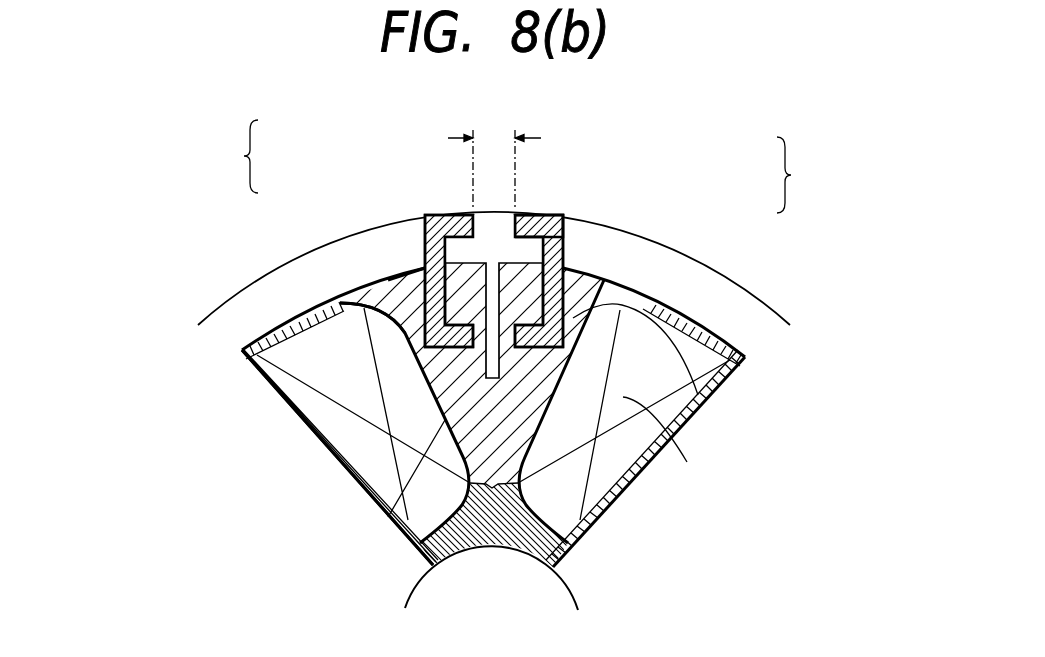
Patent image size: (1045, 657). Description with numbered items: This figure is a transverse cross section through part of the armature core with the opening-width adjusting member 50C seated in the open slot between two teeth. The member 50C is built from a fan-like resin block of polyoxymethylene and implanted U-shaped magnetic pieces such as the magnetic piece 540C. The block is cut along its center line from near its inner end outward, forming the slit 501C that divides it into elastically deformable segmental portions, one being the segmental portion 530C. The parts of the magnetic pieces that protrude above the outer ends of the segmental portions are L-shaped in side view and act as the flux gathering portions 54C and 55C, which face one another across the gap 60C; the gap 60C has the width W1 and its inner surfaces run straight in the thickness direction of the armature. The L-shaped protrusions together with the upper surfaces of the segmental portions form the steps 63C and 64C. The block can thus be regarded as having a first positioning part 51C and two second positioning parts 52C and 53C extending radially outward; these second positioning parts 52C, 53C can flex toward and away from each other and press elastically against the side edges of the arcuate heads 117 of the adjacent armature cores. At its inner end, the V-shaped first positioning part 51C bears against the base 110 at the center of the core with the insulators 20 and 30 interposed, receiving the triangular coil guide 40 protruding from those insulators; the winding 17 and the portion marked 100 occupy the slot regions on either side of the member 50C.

The arcuate head 117 is at (240, 310).
The base 110 is at (503, 565).
The coil 100 is at (618, 305).
The winding 17 is at (660, 425).
The coil guide 40 is at (500, 513).
The opening-width adjusting member 50C is at (382, 278).
The first positioning part 51C is at (607, 501).
The slit 501C is at (407, 513).
The second positioning part 52C is at (334, 233).
The second positioning part 53C is at (679, 242).
The flux gathering portion 54C is at (397, 318).
The flux gathering portion 55C is at (522, 215).
The gap 60C is at (494, 222).
The step 63C is at (425, 216).
The step 64C is at (570, 272).
The segmental portion 530C is at (585, 280).
The U-shaped magnetic piece 540C is at (423, 270).
The insulator 20 is at (403, 538).
The insulator 30 is at (337, 457).
The width W1 is at (494, 153).